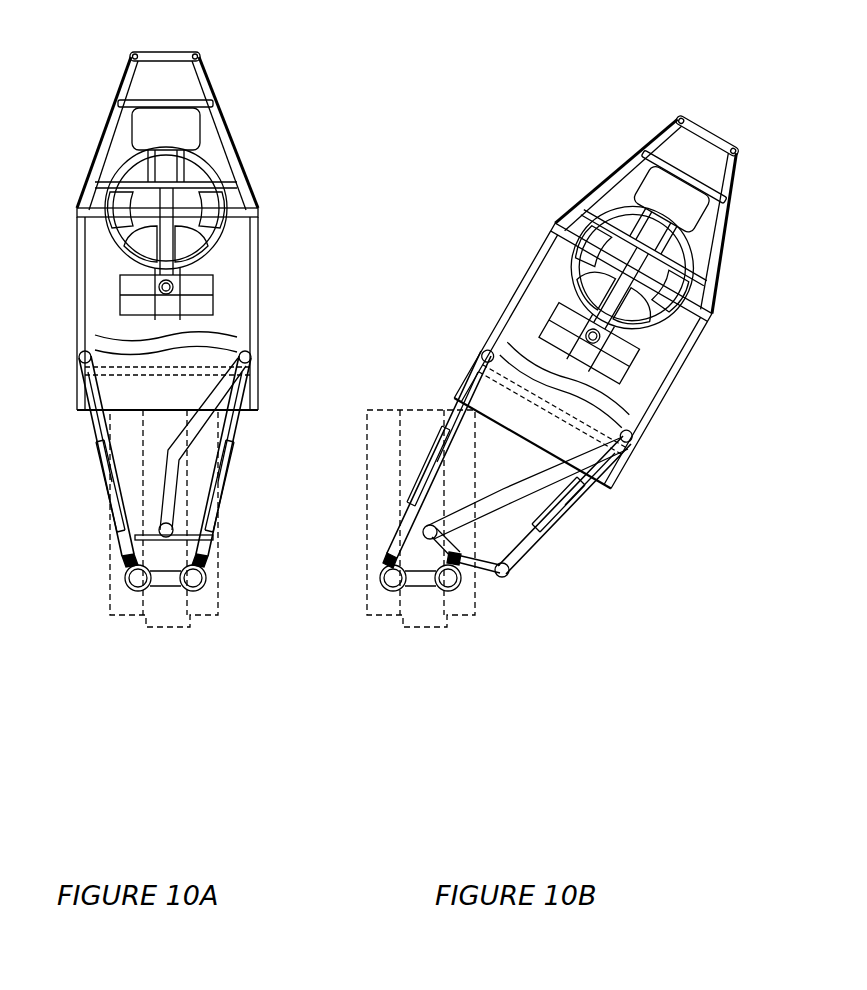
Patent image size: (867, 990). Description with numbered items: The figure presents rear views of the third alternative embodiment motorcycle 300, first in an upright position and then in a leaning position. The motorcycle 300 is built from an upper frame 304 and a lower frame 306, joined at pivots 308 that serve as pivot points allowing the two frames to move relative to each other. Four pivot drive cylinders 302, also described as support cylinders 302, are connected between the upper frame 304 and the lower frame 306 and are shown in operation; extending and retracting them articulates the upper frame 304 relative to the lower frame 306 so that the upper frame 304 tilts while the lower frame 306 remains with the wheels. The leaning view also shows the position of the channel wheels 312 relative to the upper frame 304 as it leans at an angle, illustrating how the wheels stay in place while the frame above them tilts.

In FIG. 10A, the motorcycle 300 is at (241, 80).
In FIG. 10B, the motorcycle 300 is at (625, 85).
In FIG. 10A, the pivot drive cylinders 302 is at (197, 563).
In FIG. 10B, the pivot drive cylinders 302 is at (412, 536).
In FIG. 10A, the upper frame 304 is at (168, 547).
In FIG. 10B, the upper frame 304 is at (493, 551).
In FIG. 10A, the lower frame 306 is at (195, 599).
In FIG. 10B, the lower frame 306 is at (390, 599).
In FIG. 10A, the pivots 308 is at (205, 562).
In FIG. 10B, the pivots 308 is at (388, 557).
In FIG. 10A, the channel wheels 312 is at (223, 607).
In FIG. 10B, the channel wheels 312 is at (363, 607).